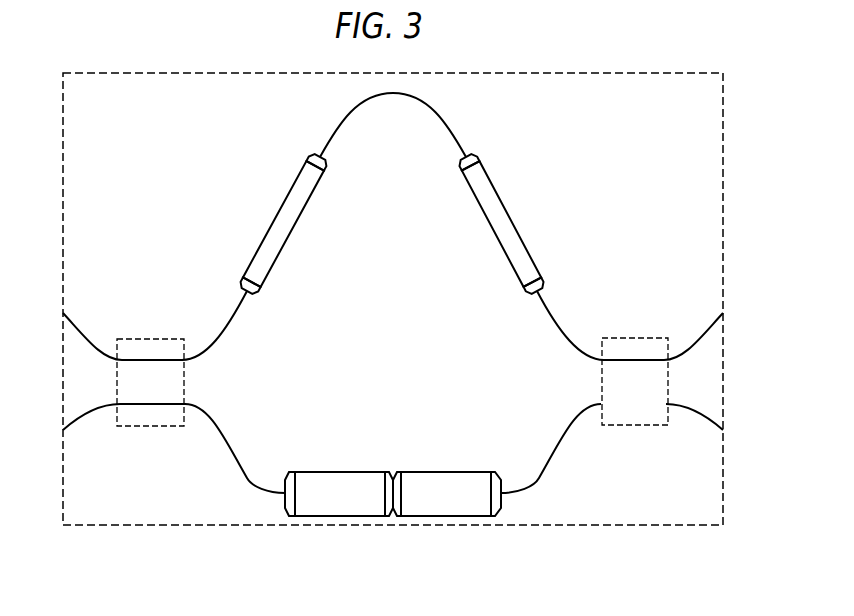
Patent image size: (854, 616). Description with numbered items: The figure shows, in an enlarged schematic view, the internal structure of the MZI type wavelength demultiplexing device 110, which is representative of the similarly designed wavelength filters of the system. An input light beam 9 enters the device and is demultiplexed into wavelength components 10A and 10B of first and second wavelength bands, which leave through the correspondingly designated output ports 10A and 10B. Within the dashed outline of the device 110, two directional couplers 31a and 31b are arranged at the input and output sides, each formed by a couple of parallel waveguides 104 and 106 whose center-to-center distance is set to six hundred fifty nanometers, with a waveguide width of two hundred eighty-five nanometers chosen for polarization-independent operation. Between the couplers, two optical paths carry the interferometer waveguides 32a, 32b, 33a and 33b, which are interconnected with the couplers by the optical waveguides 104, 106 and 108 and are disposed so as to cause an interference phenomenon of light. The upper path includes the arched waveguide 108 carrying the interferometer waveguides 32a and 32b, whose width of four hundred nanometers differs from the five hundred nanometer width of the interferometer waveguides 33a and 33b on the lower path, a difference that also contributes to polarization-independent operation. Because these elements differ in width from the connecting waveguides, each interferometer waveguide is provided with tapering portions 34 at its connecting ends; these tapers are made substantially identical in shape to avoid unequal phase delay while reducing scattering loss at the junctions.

The input light beam 9 is at (80, 331).
The wavelength component / output port 10A is at (708, 336).
The wavelength component / output port 10B is at (700, 413).
The directional coupler 31a is at (151, 428).
The directional coupler 31b is at (640, 428).
The interferometer waveguide 32a is at (285, 226).
The interferometer waveguide 32b is at (500, 226).
The interferometer waveguide 33a is at (340, 481).
The interferometer waveguide 33b is at (450, 481).
The tapering portion 34 is at (257, 293).
The optical waveguide 104 is at (223, 331).
The optical waveguide 106 is at (237, 453).
The optical waveguide 108 is at (348, 120).
The MZI type wavelength demultiplexing device 110 is at (645, 528).